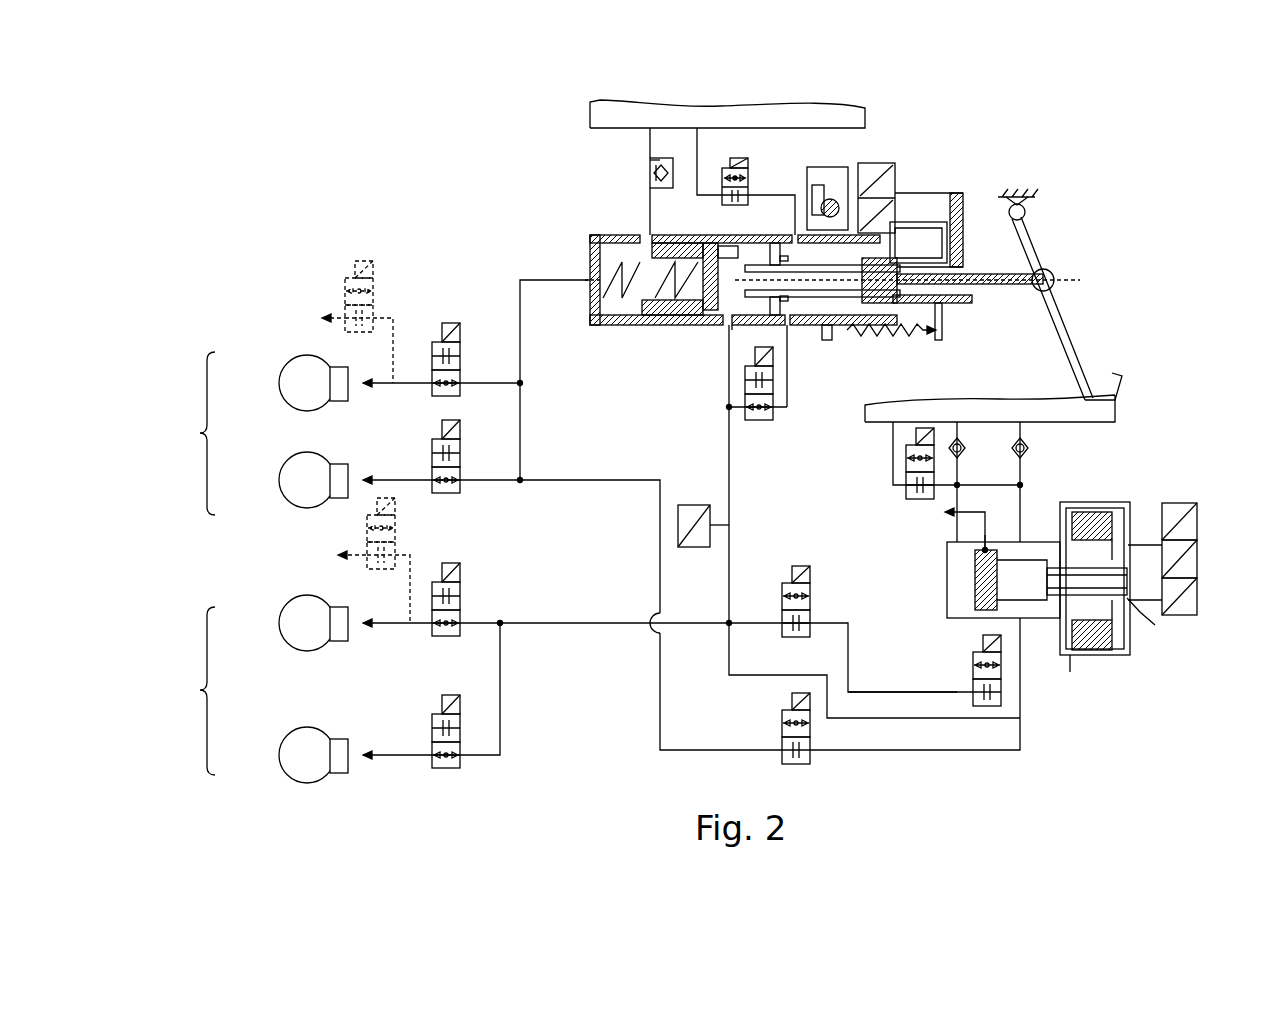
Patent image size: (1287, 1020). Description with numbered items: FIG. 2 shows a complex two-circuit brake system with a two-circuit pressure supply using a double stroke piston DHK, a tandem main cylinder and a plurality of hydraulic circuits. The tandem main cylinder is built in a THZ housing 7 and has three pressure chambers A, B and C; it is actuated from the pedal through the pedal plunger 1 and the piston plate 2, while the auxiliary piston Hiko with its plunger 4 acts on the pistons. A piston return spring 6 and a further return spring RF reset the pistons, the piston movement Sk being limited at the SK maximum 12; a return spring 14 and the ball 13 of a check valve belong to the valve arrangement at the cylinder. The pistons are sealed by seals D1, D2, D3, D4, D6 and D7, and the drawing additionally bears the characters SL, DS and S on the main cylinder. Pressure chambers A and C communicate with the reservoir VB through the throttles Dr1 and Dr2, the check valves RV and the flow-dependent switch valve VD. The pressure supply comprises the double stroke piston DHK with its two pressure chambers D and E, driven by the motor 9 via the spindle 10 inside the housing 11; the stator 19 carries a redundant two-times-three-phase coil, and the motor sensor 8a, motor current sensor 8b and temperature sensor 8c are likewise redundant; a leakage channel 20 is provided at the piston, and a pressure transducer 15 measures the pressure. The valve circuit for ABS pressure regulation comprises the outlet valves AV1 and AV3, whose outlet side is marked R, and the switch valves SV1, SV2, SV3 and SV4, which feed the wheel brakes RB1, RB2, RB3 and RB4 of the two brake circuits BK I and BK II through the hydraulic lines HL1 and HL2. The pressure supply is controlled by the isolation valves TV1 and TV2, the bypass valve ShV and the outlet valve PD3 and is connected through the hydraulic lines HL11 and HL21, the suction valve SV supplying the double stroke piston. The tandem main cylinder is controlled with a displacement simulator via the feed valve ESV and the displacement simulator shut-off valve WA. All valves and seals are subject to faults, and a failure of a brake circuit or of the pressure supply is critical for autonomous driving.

The reservoir VB is at (590, 102).
The flow-dependent switch valve VD is at (816, 195).
The check valve RV is at (650, 165).
The throttle 1 Dr1 is at (652, 172).
The displacement simulator shut-off valve WA is at (742, 168).
The throttle 2 Dr2 is at (765, 200).
The ball of check valve 13 is at (837, 200).
The auxiliary piston Hiko is at (905, 240).
The piston plate 2 is at (999, 195).
The pedal plunger 1 is at (1045, 268).
The THZ housing 7 is at (590, 237).
The pressure chamber A is at (595, 255).
The piston return spring 6 is at (590, 318).
The pressure chamber B is at (734, 240).
The return spring 14 is at (807, 210).
The sleeve SL is at (842, 238).
The plunger 4 is at (762, 325).
The seal D3 is at (785, 325).
The pressure chamber C is at (828, 340).
The seal D2 is at (862, 333).
The seal D1 is at (896, 333).
The return spring RF is at (920, 338).
The seal DS is at (640, 325).
The seal D4 is at (660, 325).
The spring S is at (673, 325).
The SK maximum 12 is at (710, 325).
The pressure transducer 15 is at (680, 505).
The hydraulic line brake circuit 1 HL1 is at (565, 478).
The hydraulic line brake circuit 2 HL2 is at (735, 468).
The feed valve ESV is at (778, 415).
The isolation valve TV2 is at (795, 566).
The isolation valve TV1 is at (780, 733).
The hydraulic line HL21 is at (950, 678).
The hydraulic line of the pressure supply HL11 is at (1008, 752).
The outlet valve PD3 is at (910, 500).
The piston movement Sk is at (945, 515).
The suction valve SV is at (962, 455).
The double stroke piston DHK is at (986, 537).
The seal D7 is at (1024, 540).
The motor 9 is at (1105, 512).
The stator with 2×3-phase coil 19 is at (1130, 536).
The motor sensor 8a is at (1197, 520).
The motor current sensor 8b is at (1197, 560).
The temperature sensor 8c is at (1197, 598).
The spindle 10 is at (1140, 608).
The housing 11 is at (1148, 632).
The leakage channel 20 is at (947, 576).
The pressure chamber D is at (965, 598).
The pressure chamber E is at (1068, 676).
The seal D6 is at (997, 612).
The bypass valve ShV is at (1004, 692).
The outlet valve AV1 is at (373, 300).
The outlet valve AV3 is at (397, 548).
The switch valve SV1 is at (460, 345).
The switch valve SV2 is at (460, 440).
The switch valve SV3 is at (460, 592).
The switch valve SV4 is at (458, 713).
The wheel brake RB1 is at (292, 370).
The wheel brake RB2 is at (292, 467).
The wheel brake RB3 is at (292, 610).
The wheel brake RB4 is at (292, 742).
The brake circuit BK I is at (179, 433).
The brake circuit BK II is at (175, 691).
The reservoir return R is at (320, 437).